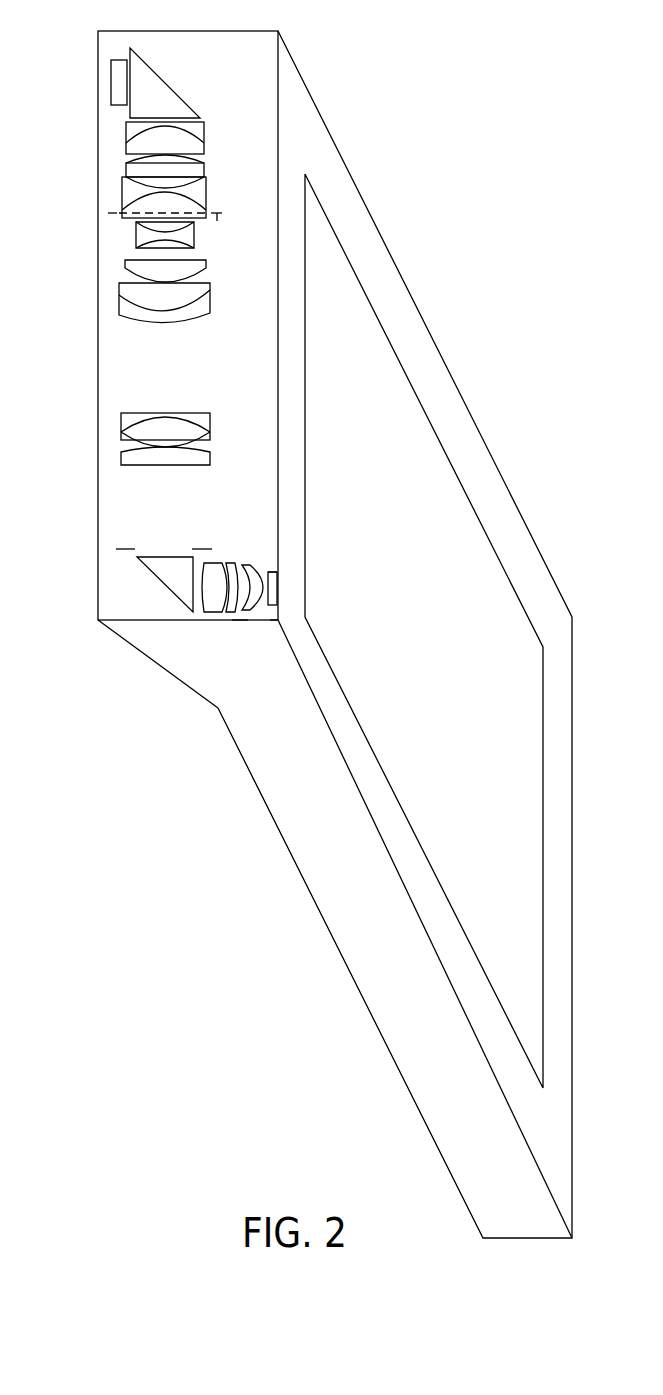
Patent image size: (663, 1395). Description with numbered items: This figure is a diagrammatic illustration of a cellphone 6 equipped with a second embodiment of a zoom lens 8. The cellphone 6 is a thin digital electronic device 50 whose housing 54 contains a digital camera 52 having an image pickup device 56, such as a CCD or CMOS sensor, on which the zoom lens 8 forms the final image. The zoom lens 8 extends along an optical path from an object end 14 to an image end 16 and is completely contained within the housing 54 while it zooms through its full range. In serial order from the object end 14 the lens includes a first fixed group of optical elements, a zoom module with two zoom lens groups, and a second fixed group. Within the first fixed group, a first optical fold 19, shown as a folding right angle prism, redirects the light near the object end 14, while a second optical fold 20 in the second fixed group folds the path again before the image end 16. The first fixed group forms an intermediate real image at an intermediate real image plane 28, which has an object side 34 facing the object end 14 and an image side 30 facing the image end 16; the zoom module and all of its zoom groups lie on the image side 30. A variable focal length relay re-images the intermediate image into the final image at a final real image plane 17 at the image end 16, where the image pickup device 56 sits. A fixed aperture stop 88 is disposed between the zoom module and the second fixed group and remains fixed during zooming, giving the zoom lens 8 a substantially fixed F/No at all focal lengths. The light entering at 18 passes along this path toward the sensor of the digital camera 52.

The cellphone 6 is at (458, 385).
The zoom lens 8 is at (210, 275).
The object end 14 is at (108, 78).
The image end 16 is at (276, 622).
The final real image plane 17 is at (272, 572).
The light path 18 is at (121, 50).
The first optical fold 19 is at (168, 85).
The second optical fold 20 is at (147, 568).
The intermediate real image plane 28 is at (110, 213).
The image side 30 is at (218, 224).
The object side 34 is at (214, 208).
The digital electronic device 50 is at (278, 587).
The digital camera 52 is at (240, 630).
The housing 54 is at (192, 689).
The image pickup device 56 is at (262, 583).
The aperture stop 88 is at (118, 549).